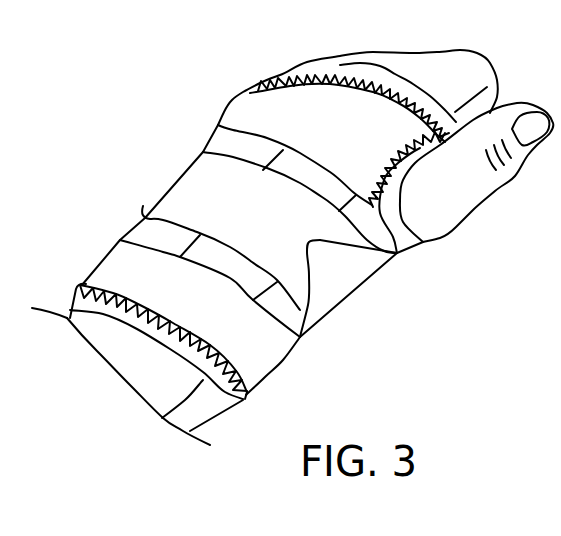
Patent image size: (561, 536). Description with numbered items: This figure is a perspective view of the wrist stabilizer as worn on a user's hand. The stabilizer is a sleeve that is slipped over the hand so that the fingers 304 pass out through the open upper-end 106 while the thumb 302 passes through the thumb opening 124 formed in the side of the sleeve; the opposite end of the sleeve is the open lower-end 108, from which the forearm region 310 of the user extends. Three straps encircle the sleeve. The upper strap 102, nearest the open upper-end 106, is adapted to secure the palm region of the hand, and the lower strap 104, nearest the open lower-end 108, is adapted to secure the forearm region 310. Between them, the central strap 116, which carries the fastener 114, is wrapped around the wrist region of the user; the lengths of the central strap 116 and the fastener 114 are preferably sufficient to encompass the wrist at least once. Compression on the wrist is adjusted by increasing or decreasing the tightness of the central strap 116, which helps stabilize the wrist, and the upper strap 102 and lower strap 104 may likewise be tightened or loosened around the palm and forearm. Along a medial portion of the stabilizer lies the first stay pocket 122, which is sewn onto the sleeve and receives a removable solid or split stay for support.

The upper strap 102 is at (245, 103).
The lower strap 104 is at (103, 258).
The open upper-end 106 is at (347, 65).
The open lower-end 108 is at (163, 418).
The fastener 114 is at (245, 220).
The central strap 116 is at (381, 268).
The first stay pocket 122 is at (363, 120).
The thumb opening 124 is at (423, 243).
The thumb 302 is at (470, 200).
The fingers 304 is at (473, 65).
The forearm region 310 is at (68, 318).